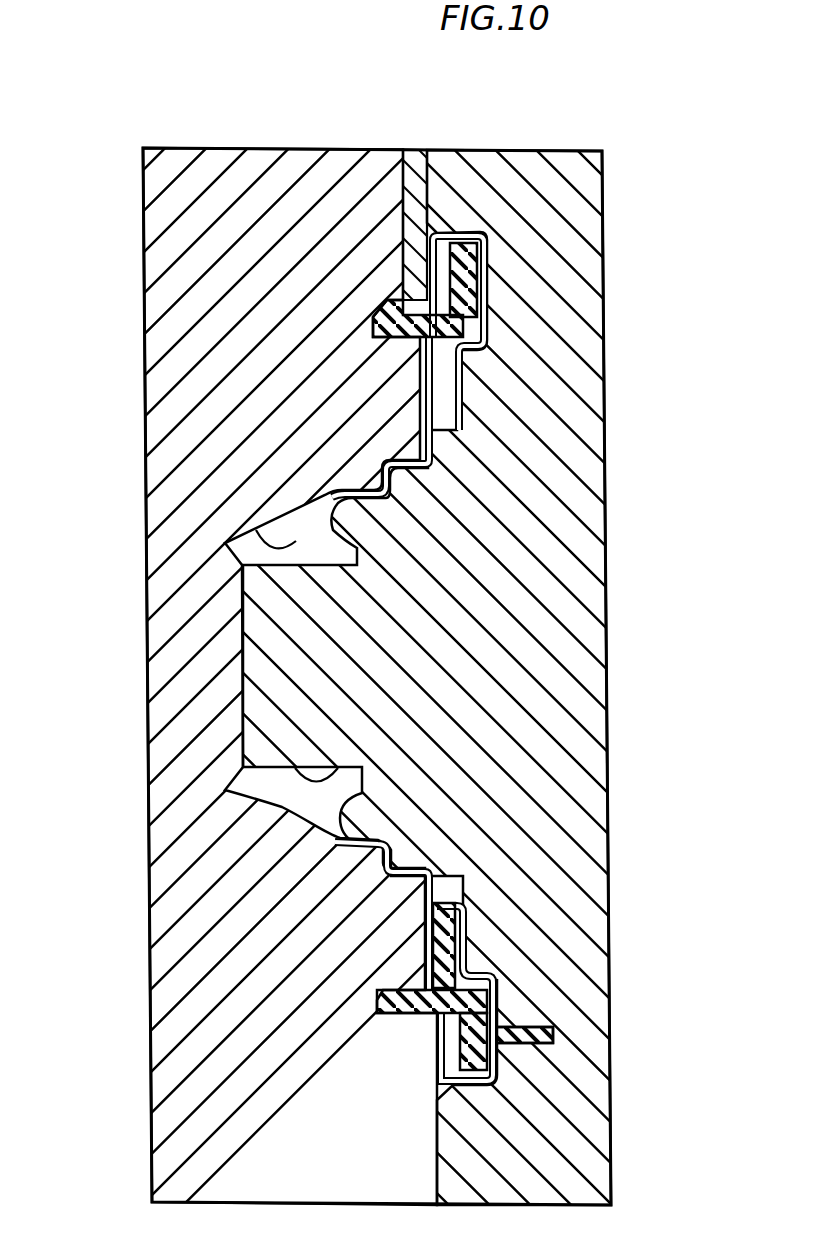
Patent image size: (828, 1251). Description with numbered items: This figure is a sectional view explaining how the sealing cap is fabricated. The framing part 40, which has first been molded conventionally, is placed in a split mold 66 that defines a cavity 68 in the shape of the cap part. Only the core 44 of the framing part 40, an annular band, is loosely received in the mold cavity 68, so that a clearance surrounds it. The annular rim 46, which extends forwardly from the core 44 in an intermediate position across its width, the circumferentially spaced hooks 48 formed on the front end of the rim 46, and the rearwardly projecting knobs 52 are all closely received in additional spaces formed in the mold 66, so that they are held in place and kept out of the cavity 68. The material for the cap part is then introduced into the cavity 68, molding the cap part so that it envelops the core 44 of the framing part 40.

The framing part 40 is at (466, 230).
The core 44 is at (480, 267).
The annular rim 46 is at (385, 1000).
The hooks 48 is at (393, 298).
The knobs 52 is at (553, 1035).
The split mold 66 is at (607, 392).
The cavity 68 is at (262, 538).